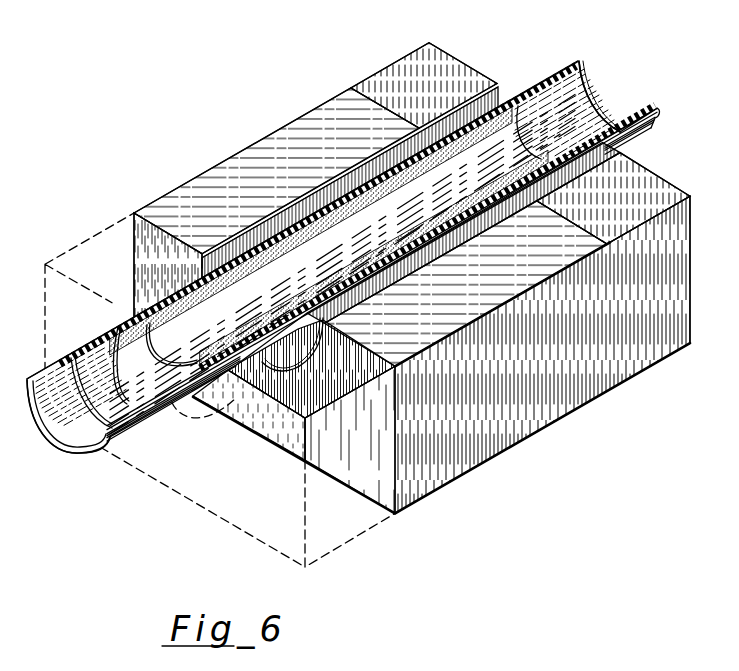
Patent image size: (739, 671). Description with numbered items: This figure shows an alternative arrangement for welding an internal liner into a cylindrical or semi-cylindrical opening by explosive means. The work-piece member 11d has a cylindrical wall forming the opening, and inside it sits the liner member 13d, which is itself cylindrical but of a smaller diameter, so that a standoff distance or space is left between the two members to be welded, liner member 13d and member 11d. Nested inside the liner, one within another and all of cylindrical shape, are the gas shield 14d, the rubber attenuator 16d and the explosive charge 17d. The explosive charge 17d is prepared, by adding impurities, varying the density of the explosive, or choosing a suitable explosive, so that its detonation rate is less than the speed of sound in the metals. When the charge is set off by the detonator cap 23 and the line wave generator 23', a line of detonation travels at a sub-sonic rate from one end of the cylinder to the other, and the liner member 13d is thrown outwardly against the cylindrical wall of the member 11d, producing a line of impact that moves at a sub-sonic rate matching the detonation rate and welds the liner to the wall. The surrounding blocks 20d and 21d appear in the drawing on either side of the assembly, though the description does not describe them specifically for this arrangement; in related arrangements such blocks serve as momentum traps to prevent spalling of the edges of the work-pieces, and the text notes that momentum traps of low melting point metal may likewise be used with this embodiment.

The member 11d is at (501, 446).
The liner member 13d is at (245, 240).
The gas shield 14d is at (586, 85).
The rubber attenuator 16d is at (68, 362).
The explosive charge 17d is at (323, 288).
The left clamping block 20d is at (60, 263).
The right clamping block 21d is at (651, 171).
The detonator cap 23 is at (96, 382).
The line wave generator 23' is at (162, 356).